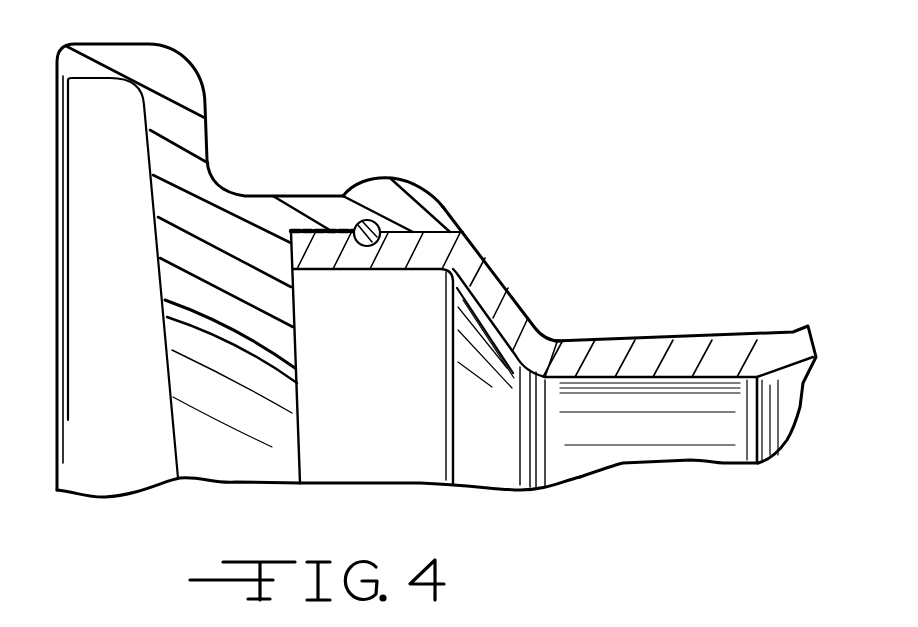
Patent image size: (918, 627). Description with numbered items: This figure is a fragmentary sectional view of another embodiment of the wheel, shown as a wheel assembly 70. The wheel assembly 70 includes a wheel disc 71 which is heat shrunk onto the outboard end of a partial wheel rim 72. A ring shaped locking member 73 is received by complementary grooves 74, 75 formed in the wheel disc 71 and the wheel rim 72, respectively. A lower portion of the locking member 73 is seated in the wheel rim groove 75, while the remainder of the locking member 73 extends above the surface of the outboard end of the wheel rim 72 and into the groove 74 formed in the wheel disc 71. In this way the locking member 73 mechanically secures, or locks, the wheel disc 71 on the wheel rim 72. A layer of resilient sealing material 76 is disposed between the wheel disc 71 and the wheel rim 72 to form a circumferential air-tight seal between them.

The wheel assembly 70 is at (540, 237).
The wheel disc 71 is at (190, 131).
The partial wheel rim 72 is at (639, 360).
The ring shaped locking member 73 is at (362, 247).
The groove 74 is at (357, 223).
The groove 75 is at (418, 270).
The layer of resilient sealing material 76 is at (320, 238).